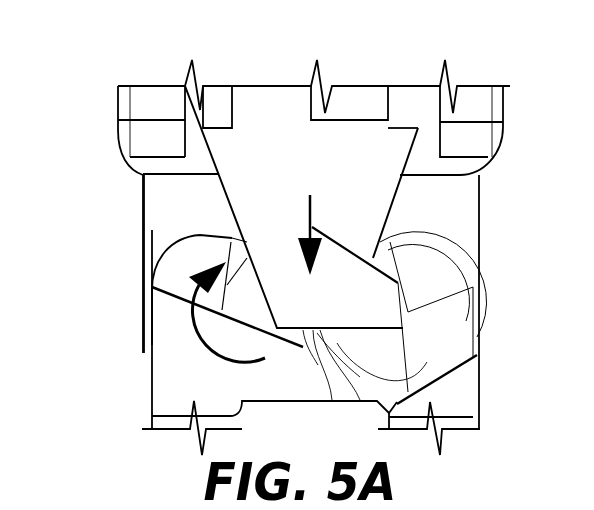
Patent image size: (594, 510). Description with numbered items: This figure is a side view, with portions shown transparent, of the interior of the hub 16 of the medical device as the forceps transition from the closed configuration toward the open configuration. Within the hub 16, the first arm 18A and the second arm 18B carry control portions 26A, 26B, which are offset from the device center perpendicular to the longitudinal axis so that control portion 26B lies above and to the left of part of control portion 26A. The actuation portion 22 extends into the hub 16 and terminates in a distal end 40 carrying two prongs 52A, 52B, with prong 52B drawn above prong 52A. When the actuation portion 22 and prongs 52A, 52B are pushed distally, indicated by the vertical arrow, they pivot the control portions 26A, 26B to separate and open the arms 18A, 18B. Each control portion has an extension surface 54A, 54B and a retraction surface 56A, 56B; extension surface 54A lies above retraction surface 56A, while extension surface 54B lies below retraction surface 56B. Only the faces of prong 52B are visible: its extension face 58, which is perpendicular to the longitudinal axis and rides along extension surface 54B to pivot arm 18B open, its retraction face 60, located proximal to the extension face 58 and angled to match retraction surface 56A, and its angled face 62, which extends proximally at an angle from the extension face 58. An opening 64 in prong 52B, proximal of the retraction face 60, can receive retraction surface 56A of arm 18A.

The hub 16 is at (505, 97).
The first arm 18A is at (467, 405).
The second arm 18B is at (150, 413).
The actuation portion 22 is at (267, 110).
The control portion 26A is at (460, 346).
The control portion 26B is at (153, 352).
The distal end 40 is at (182, 207).
The prong 52A is at (383, 200).
The prong 52B is at (250, 185).
The extension surface 54A is at (389, 432).
The extension surface 54B is at (268, 328).
The retraction surface 56A is at (407, 240).
The retraction surface 56B is at (168, 240).
The extension face 58 is at (318, 330).
The retraction face 60 is at (348, 245).
The angled face 62 is at (232, 222).
The opening 64 is at (343, 190).